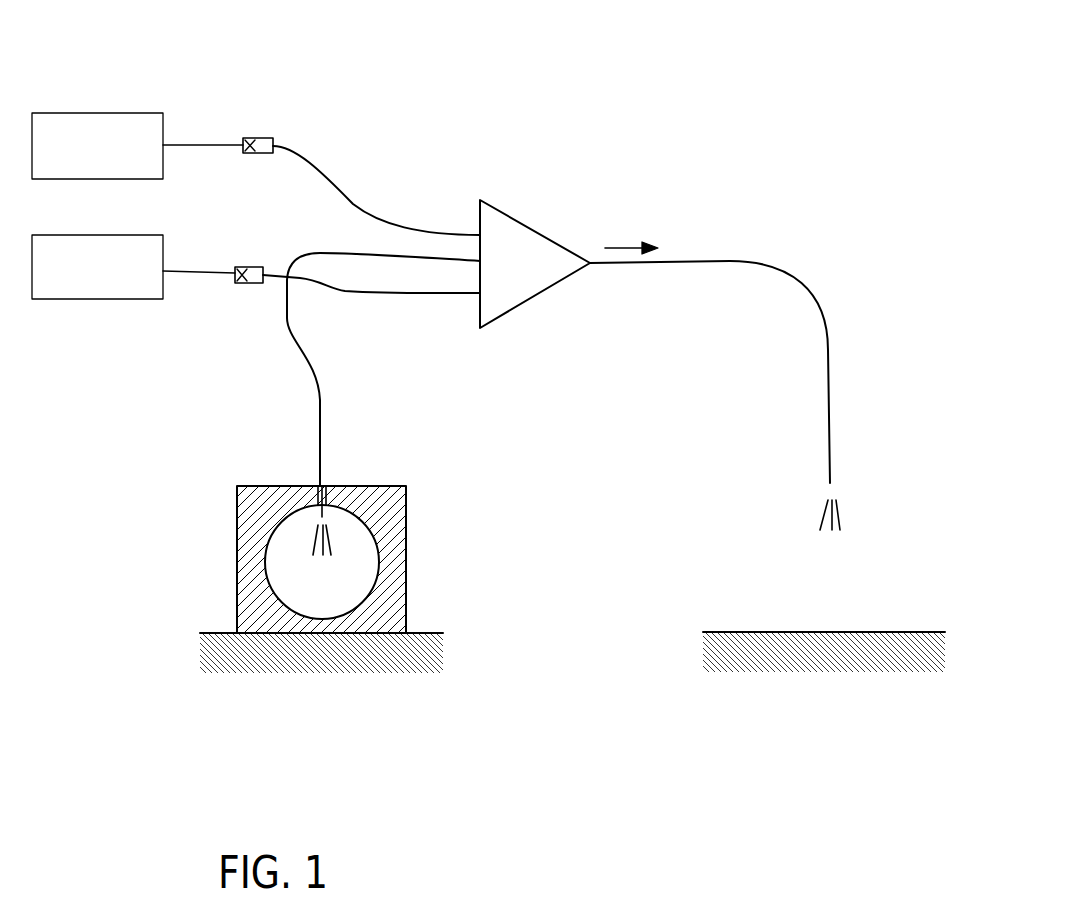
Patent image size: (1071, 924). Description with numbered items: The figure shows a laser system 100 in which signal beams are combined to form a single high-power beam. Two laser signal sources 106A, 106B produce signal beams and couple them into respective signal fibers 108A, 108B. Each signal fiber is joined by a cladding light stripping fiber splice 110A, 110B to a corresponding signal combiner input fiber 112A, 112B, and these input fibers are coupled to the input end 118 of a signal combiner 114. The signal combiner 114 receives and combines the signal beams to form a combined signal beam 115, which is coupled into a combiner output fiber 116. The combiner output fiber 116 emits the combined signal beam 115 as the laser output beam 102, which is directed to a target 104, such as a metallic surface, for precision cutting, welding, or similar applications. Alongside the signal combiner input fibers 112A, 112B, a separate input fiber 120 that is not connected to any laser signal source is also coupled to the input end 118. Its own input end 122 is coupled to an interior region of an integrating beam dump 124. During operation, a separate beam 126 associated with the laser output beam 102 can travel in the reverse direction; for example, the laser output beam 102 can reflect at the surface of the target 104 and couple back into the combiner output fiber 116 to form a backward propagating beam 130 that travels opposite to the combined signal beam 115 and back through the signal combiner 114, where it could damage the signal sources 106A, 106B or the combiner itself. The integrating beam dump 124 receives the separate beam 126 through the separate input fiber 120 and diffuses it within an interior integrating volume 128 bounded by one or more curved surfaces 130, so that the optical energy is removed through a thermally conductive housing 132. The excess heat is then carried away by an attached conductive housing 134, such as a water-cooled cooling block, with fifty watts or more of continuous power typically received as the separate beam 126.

The laser system 100 is at (772, 105).
The laser output beam 102 is at (837, 522).
The target 104 is at (820, 632).
The laser signal source 106A is at (72, 158).
The laser signal source 106B is at (72, 280).
The signal fiber 108A is at (198, 144).
The signal fiber 108B is at (183, 270).
The cladding light stripping fiber splice 110A is at (253, 136).
The cladding light stripping fiber splice 110B is at (248, 267).
The signal combiner input fiber 112A is at (353, 205).
The signal combiner input fiber 112B is at (337, 292).
The signal combiner 114 is at (500, 274).
The combined signal beam 115 is at (623, 247).
The combiner output fiber 116 is at (720, 250).
The input end 118 is at (455, 190).
The separate input fiber 120 is at (287, 322).
The input end 122 is at (327, 505).
The integrating beam dump 124 is at (403, 518).
The separate beam 126 is at (310, 537).
The interior integrating volume 128 is at (306, 583).
The backward propagating beam 130 is at (292, 594).
The thermally conductive housing 132 is at (405, 568).
The conductive housing 134 is at (425, 633).